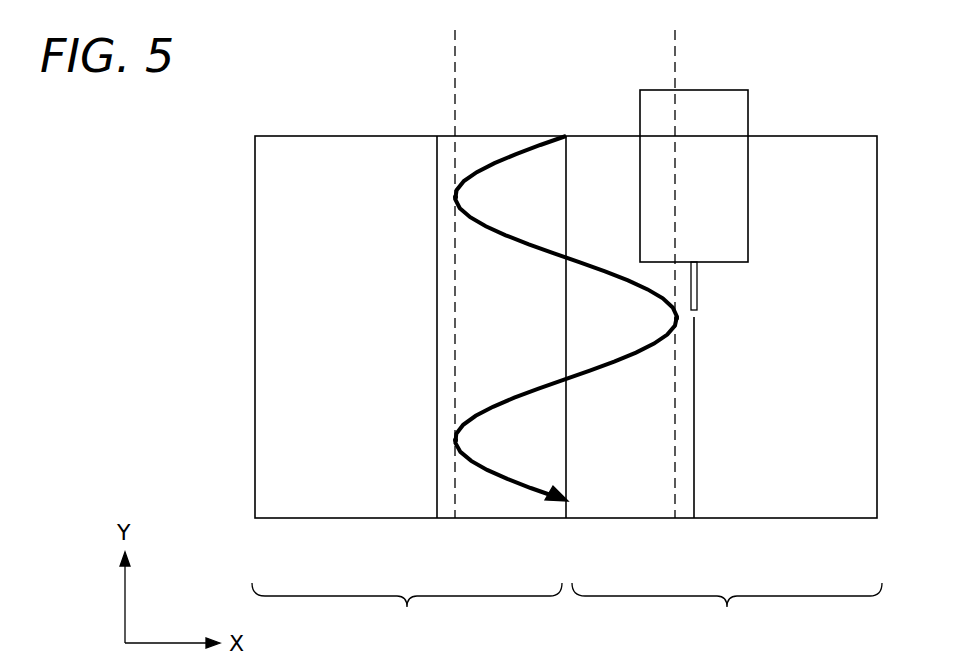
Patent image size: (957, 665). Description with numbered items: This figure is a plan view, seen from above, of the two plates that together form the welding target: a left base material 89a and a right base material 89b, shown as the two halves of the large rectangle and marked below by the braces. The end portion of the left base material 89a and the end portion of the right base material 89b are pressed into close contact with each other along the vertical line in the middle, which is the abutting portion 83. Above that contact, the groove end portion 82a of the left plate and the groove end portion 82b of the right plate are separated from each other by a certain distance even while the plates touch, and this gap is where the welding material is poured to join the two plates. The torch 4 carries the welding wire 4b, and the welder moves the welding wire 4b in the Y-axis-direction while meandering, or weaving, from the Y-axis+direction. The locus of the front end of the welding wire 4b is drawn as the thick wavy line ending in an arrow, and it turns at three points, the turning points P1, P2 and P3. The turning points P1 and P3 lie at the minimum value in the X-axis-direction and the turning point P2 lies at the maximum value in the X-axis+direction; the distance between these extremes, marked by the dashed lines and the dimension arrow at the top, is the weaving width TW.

The torch 4 is at (750, 105).
The welding wire 4b is at (698, 280).
The groove end portion 82a is at (437, 498).
The groove end portion 82b is at (695, 500).
The abutting portion 83 is at (566, 500).
The left base material 89a is at (407, 612).
The right base material 89b is at (727, 612).
The turning point P1 is at (455, 196).
The turning point P2 is at (679, 318).
The turning point P3 is at (455, 439).
The weaving width TW is at (673, 43).